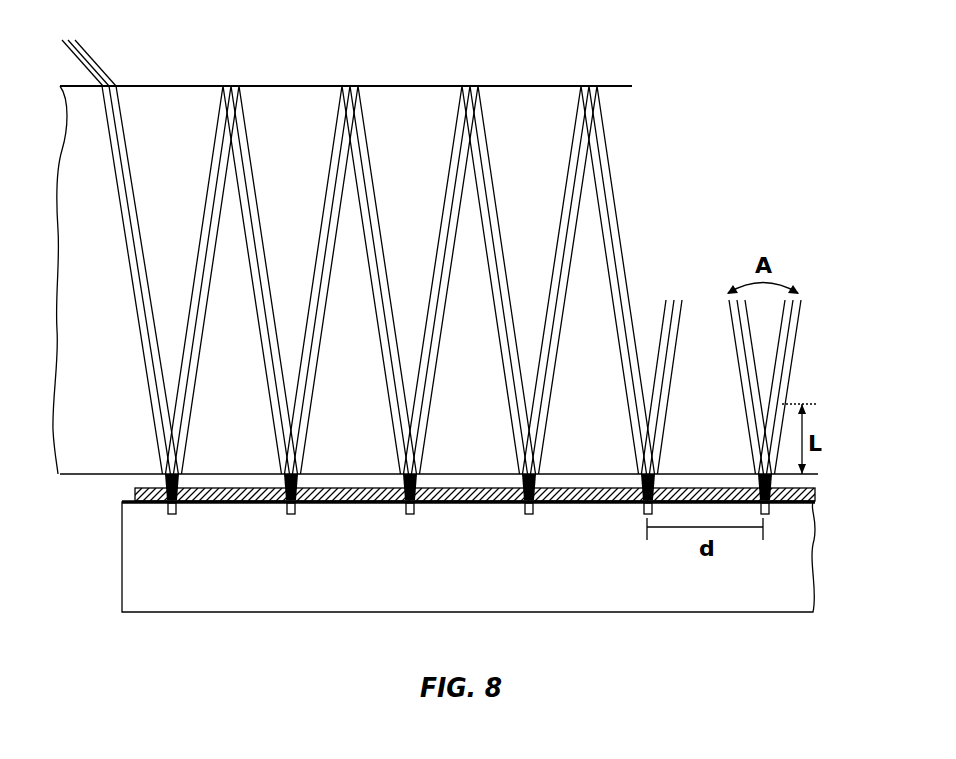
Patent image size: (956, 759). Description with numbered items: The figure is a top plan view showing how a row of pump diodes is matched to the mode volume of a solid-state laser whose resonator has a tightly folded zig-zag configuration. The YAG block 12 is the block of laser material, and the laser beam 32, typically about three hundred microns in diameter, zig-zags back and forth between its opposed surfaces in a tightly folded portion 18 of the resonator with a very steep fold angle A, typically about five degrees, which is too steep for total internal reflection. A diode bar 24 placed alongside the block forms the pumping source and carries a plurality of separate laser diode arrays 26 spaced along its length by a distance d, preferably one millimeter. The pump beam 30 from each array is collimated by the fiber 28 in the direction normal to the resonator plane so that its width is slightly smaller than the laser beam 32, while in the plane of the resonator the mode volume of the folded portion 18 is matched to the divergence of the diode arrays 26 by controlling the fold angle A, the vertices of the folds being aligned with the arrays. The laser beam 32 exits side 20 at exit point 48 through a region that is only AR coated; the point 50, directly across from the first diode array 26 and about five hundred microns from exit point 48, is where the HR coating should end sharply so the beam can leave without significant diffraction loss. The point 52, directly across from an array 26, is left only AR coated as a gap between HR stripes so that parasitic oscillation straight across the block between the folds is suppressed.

The YAG block 12 is at (435, 280).
The tightly folded portion 18 is at (140, 320).
The side 20 is at (89, 85).
The diode bar 24 is at (662, 604).
The laser diode arrays 26 is at (172, 518).
The fiber 28 is at (817, 500).
The pump beam 30 is at (757, 486).
The laser beam 32 is at (440, 262).
The exit point 48 is at (118, 85).
The point 50 is at (188, 85).
The point 52 is at (281, 85).